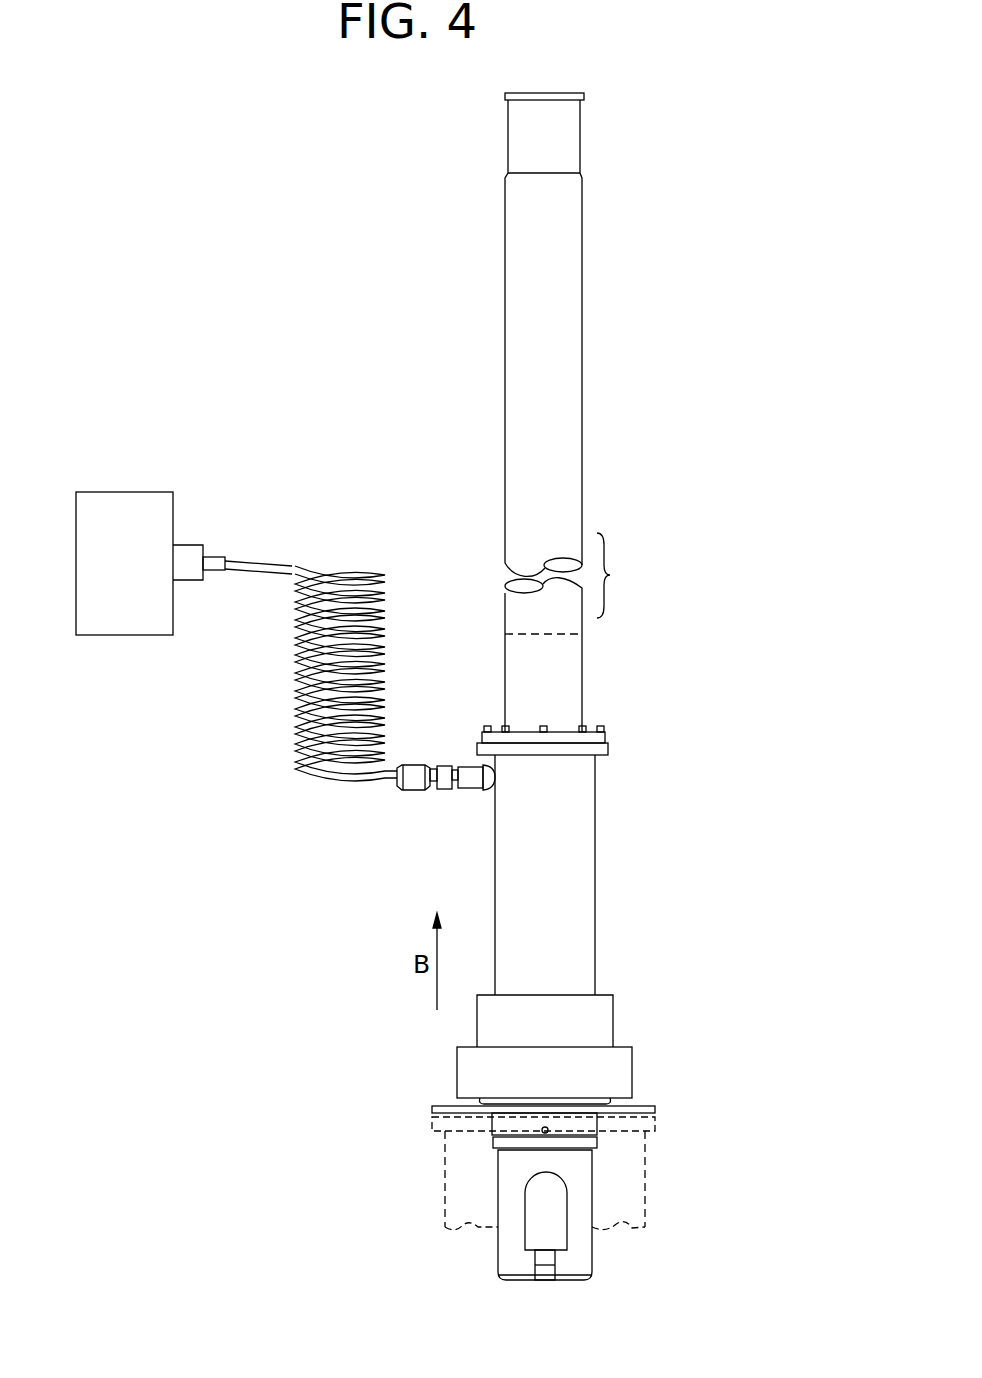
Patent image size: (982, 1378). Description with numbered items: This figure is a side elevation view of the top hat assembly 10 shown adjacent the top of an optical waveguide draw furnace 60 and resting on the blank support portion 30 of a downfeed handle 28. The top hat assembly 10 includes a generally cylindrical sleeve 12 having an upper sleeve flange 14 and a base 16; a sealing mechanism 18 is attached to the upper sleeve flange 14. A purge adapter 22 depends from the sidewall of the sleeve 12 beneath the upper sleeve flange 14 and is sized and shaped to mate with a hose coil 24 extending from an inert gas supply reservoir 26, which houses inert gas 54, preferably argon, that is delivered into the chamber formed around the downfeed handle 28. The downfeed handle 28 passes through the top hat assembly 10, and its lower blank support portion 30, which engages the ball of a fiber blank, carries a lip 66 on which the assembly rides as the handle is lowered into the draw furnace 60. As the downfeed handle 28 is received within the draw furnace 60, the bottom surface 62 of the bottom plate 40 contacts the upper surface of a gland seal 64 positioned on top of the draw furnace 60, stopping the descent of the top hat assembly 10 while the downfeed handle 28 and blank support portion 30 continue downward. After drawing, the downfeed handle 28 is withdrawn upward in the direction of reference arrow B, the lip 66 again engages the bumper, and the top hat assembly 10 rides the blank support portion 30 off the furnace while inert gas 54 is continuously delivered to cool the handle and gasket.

The top hat assembly 10 is at (591, 901).
The sleeve 12 is at (568, 925).
The upper sleeve flange 14 is at (608, 750).
The base 16 is at (615, 1068).
The sealing mechanism 18 is at (612, 733).
The purge adapter 22 is at (478, 790).
The hose coil 24 is at (294, 662).
The inert gas supply reservoir 26 is at (184, 601).
The downfeed handle 28 is at (563, 398).
The blank support portion 30 is at (583, 1213).
The bottom plate 40 is at (545, 1095).
The inert gas 54 is at (138, 567).
The optical waveguide draw furnace 60 is at (462, 1192).
The bottom surface 62 is at (655, 1110).
The gland seal 64 is at (432, 1118).
The lip 66 is at (608, 1120).